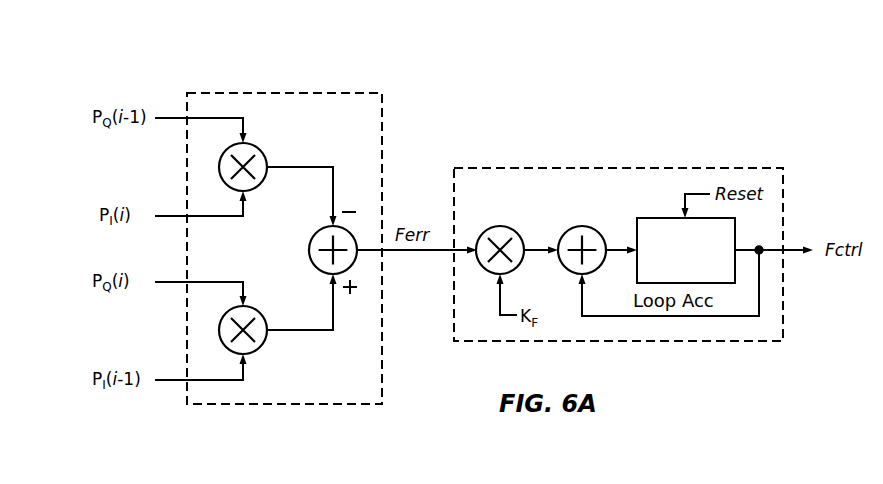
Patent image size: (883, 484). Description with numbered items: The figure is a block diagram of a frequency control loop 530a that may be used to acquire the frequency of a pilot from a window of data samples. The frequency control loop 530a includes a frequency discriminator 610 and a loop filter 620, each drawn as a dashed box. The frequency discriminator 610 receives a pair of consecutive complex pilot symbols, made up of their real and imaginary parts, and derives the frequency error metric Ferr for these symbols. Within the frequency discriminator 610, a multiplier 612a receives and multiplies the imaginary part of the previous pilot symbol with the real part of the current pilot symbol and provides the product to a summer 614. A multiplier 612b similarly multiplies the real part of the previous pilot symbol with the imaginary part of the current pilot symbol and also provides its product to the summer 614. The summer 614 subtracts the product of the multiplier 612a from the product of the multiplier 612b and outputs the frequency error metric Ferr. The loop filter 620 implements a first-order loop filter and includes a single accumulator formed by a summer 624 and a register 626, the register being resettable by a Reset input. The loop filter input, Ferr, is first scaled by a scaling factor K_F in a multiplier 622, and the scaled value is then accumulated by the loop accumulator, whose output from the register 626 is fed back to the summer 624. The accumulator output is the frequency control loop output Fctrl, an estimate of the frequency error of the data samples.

The frequency control loop 530a is at (803, 88).
The frequency discriminator 610 is at (283, 93).
The multiplier 612a is at (270, 138).
The multiplier 612b is at (270, 301).
The summer 614 is at (312, 232).
The loop filter 620 is at (619, 168).
The multiplier 622 is at (496, 226).
The summer 624 is at (578, 226).
The register 626 is at (663, 218).